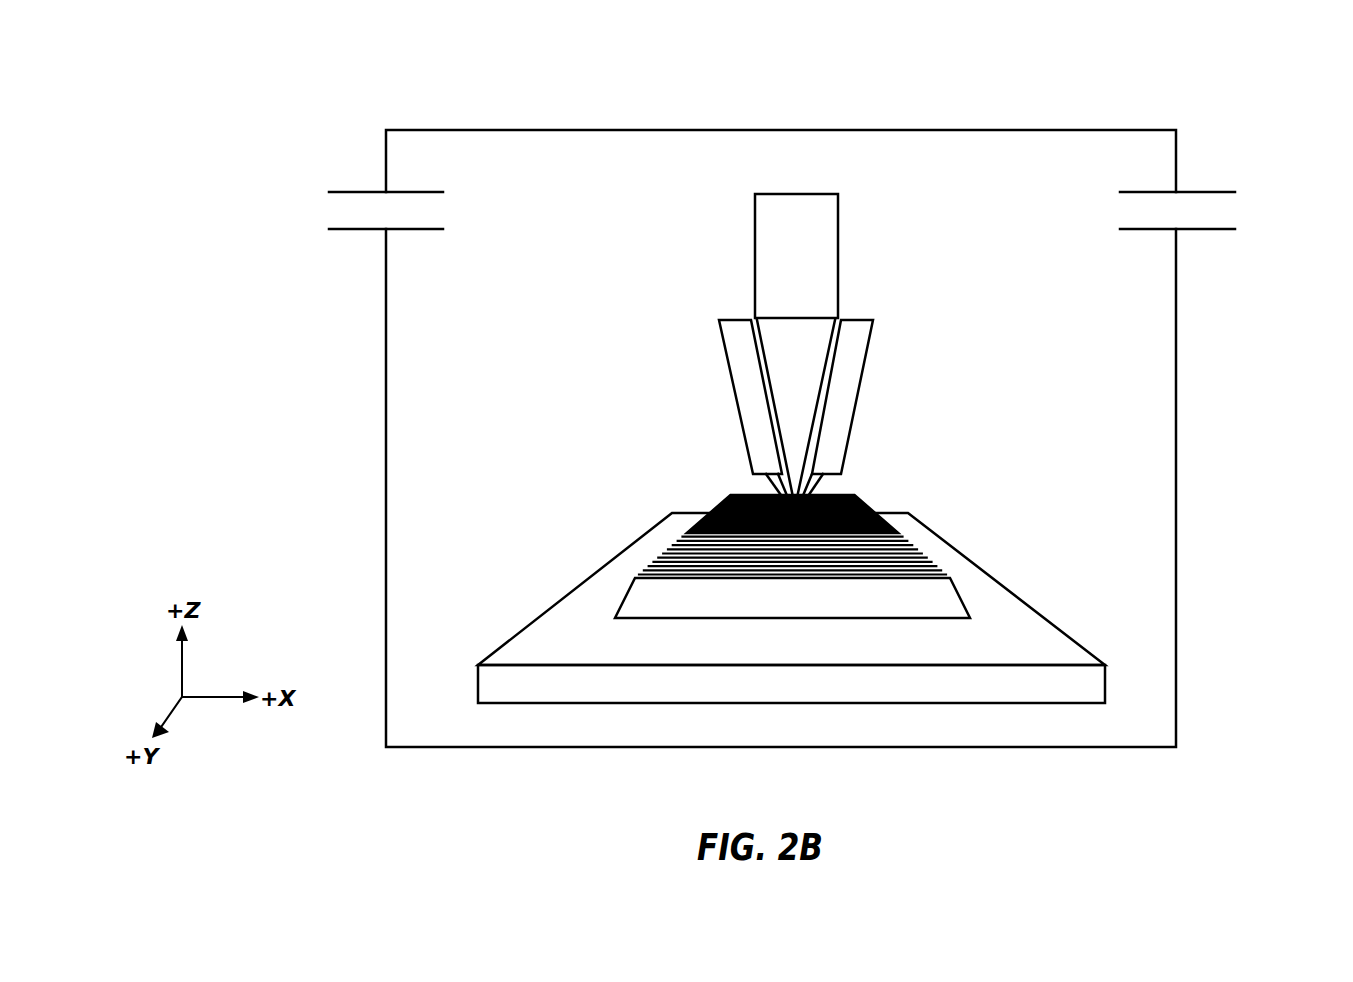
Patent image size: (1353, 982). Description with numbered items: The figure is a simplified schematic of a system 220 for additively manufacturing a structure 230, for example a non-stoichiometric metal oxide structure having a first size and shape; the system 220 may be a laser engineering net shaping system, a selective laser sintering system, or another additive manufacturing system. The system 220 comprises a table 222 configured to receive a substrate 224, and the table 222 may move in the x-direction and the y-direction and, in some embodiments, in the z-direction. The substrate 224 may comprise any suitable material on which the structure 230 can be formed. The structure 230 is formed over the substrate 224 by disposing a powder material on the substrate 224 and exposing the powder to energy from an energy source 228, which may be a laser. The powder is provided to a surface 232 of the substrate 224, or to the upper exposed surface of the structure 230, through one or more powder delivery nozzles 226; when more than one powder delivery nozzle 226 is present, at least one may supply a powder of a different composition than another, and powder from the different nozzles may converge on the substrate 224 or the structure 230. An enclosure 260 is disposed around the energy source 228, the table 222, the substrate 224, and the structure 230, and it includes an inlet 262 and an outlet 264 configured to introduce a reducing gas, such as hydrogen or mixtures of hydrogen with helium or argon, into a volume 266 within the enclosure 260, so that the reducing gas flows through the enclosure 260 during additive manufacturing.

The system 220 is at (180, 149).
The table 222 is at (1015, 637).
The substrate 224 is at (652, 597).
The powder delivery nozzle 226 is at (857, 350).
The energy source 228 is at (790, 376).
The structure 230 is at (665, 548).
The surface 232 is at (867, 503).
The enclosure 260 is at (1180, 410).
The inlet 262 is at (350, 213).
The outlet 264 is at (1202, 210).
The volume 266 is at (628, 226).